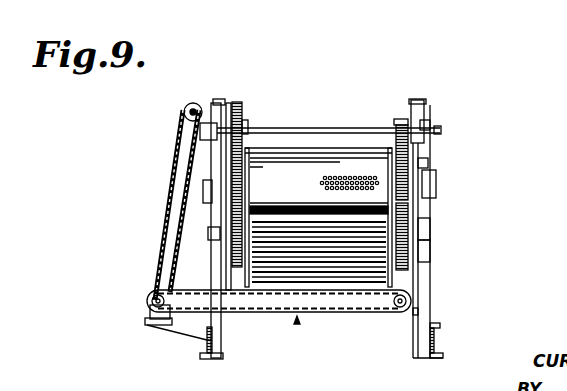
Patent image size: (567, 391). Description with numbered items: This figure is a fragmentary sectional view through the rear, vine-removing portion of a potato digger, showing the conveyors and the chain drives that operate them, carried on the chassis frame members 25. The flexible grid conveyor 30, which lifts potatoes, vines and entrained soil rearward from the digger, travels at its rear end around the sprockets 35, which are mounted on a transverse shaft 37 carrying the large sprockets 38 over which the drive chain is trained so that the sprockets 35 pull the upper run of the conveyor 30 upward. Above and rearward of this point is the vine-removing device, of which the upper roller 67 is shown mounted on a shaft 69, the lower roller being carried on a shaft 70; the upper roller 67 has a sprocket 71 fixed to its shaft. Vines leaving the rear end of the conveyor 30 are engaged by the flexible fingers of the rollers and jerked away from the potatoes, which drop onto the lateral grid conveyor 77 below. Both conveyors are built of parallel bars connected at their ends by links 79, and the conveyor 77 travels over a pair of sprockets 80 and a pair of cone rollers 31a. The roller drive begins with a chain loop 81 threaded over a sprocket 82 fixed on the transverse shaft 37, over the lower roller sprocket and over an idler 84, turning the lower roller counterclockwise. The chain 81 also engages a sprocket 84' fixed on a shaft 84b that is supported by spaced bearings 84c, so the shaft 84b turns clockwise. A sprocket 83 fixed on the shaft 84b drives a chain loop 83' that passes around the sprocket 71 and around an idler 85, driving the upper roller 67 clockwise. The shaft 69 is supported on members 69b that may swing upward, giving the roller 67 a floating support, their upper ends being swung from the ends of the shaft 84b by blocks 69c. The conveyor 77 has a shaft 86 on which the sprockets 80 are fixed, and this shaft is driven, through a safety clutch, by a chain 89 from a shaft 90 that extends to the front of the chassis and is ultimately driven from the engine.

The chassis frame member 25 is at (207, 350).
The flexible grid conveyor 30 is at (298, 266).
The cone rollers 31a is at (413, 293).
The sprockets 35 is at (210, 210).
The transverse shaft 37 is at (430, 232).
The large sprockets 38 is at (410, 265).
The upper roller 67 is at (305, 160).
The shaft 69 is at (215, 170).
The members 69b is at (215, 185).
The blocks 69c is at (200, 130).
The shaft 70 is at (423, 240).
The sprocket 71 is at (410, 185).
The lateral grid conveyor 77 is at (297, 318).
The links 79 is at (350, 310).
The sprockets 80 is at (170, 292).
The chain loop 81 is at (197, 165).
The sprocket 82 is at (228, 268).
The sprocket 83 is at (439, 108).
The chain loop 83' is at (425, 91).
The idler 84 is at (259, 169).
The sprocket 84' is at (268, 118).
The shaft 84b is at (345, 134).
The bearings 84c is at (218, 103).
The idler 85 is at (393, 163).
The shaft 86 is at (150, 302).
The chain 89 is at (182, 141).
The shaft 90 is at (185, 106).